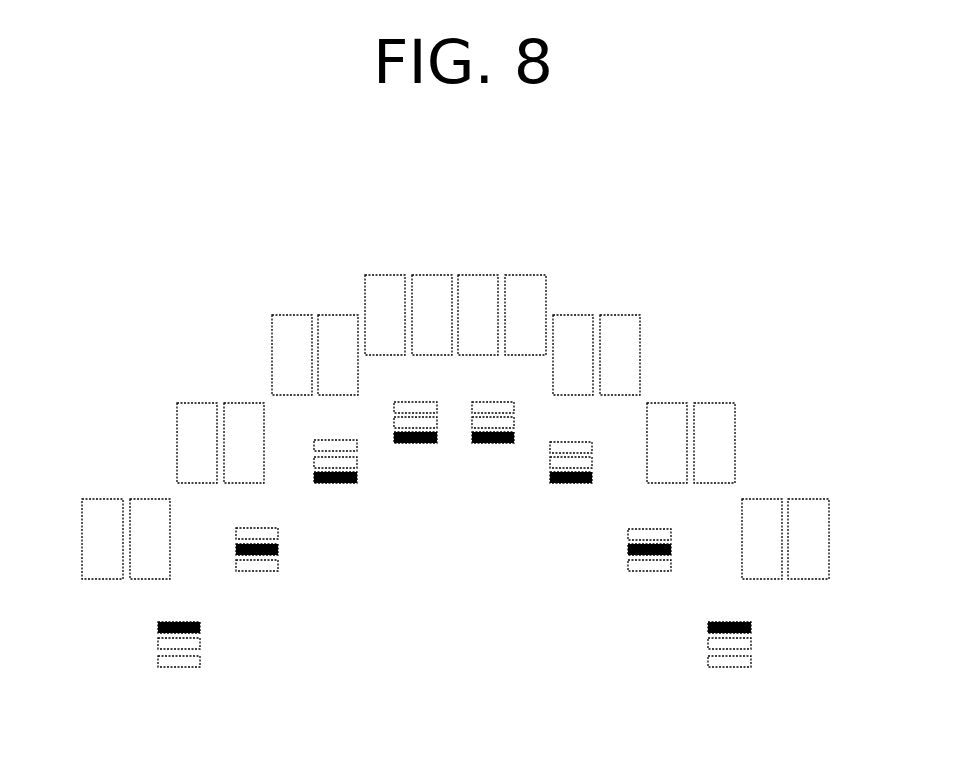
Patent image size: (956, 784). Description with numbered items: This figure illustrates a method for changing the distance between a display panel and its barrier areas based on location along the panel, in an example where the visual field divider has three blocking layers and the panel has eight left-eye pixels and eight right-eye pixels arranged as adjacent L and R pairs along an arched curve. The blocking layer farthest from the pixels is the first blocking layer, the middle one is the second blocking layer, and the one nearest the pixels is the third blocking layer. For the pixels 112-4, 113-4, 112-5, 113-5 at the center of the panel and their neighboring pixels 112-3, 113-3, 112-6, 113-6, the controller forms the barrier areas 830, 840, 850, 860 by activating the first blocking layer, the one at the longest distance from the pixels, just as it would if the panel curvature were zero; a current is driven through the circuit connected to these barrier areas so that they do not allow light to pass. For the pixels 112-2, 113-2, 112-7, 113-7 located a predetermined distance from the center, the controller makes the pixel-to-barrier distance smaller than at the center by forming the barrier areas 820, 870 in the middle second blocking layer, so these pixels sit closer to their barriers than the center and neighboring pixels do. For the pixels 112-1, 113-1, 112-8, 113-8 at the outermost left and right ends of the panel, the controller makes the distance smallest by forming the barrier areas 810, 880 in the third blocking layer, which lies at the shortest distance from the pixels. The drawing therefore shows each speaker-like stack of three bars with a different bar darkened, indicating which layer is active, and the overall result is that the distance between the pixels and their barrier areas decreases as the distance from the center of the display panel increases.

The left-eye pixel 112-1 is at (102, 498).
The right-eye pixel 113-1 is at (140, 499).
The left-eye pixel 112-2 is at (197, 402).
The right-eye pixel 113-2 is at (234, 402).
The left-eye pixel 112-3 is at (292, 314).
The right-eye pixel 113-3 is at (328, 314).
The left-eye pixel 112-4 is at (386, 274).
The right-eye pixel 113-4 is at (419, 274).
The left-eye pixel 112-5 is at (495, 274).
The right-eye pixel 113-5 is at (559, 250).
The left-eye pixel 112-6 is at (585, 314).
The right-eye pixel 113-6 is at (648, 298).
The left-eye pixel 112-7 is at (679, 402).
The right-eye pixel 113-7 is at (745, 386).
The left-eye pixel 112-8 is at (774, 498).
The right-eye pixel 113-8 is at (841, 483).
The barrier area 810 is at (158, 624).
The barrier area 820 is at (278, 547).
The barrier area 830 is at (340, 483).
The barrier area 840 is at (418, 443).
The barrier area 850 is at (496, 443).
The barrier area 860 is at (572, 483).
The barrier area 870 is at (628, 547).
The barrier area 880 is at (751, 624).